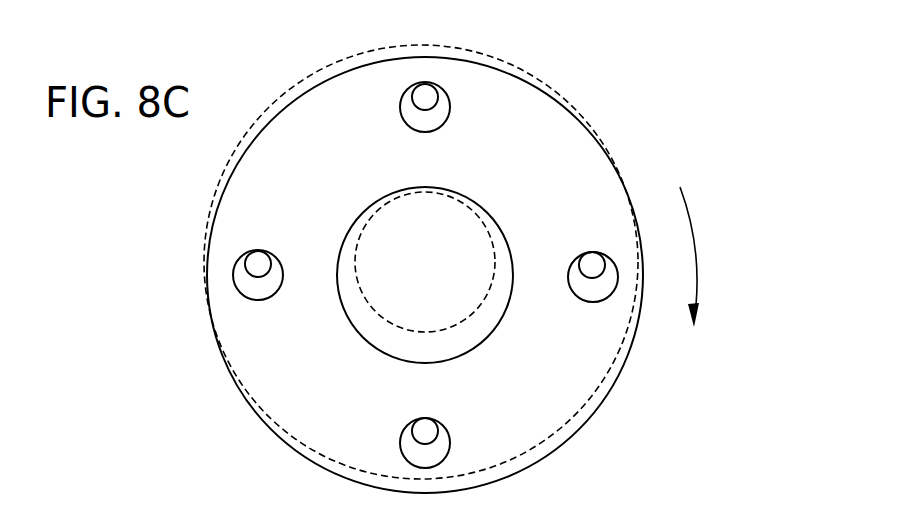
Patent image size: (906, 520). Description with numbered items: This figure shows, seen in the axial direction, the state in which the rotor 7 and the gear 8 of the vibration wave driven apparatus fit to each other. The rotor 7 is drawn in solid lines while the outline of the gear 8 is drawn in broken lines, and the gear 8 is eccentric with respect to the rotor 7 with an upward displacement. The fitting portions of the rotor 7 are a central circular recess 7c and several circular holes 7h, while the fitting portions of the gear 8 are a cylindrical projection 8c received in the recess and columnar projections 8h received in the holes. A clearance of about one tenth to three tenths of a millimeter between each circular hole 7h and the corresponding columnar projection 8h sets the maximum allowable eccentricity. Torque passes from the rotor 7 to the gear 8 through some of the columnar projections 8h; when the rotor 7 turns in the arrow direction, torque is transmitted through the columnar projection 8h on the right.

The rotor 7 is at (606, 148).
The gear 8 is at (536, 73).
The circular recess 7c is at (484, 329).
The cylindrical projection 8c is at (463, 202).
The circular holes 7h is at (585, 295).
The columnar projections 8h is at (593, 257).